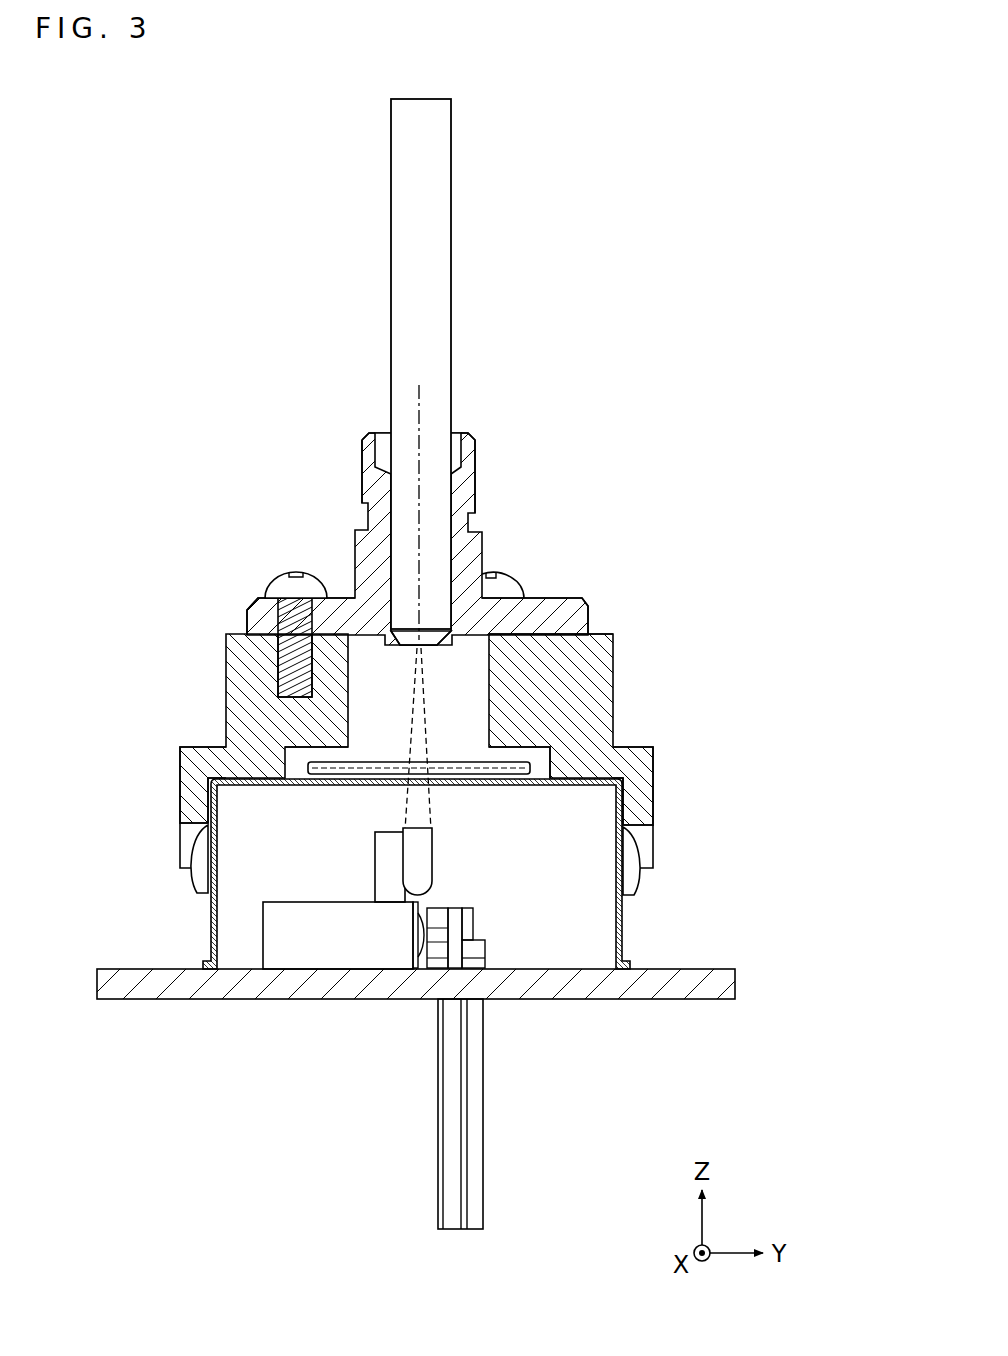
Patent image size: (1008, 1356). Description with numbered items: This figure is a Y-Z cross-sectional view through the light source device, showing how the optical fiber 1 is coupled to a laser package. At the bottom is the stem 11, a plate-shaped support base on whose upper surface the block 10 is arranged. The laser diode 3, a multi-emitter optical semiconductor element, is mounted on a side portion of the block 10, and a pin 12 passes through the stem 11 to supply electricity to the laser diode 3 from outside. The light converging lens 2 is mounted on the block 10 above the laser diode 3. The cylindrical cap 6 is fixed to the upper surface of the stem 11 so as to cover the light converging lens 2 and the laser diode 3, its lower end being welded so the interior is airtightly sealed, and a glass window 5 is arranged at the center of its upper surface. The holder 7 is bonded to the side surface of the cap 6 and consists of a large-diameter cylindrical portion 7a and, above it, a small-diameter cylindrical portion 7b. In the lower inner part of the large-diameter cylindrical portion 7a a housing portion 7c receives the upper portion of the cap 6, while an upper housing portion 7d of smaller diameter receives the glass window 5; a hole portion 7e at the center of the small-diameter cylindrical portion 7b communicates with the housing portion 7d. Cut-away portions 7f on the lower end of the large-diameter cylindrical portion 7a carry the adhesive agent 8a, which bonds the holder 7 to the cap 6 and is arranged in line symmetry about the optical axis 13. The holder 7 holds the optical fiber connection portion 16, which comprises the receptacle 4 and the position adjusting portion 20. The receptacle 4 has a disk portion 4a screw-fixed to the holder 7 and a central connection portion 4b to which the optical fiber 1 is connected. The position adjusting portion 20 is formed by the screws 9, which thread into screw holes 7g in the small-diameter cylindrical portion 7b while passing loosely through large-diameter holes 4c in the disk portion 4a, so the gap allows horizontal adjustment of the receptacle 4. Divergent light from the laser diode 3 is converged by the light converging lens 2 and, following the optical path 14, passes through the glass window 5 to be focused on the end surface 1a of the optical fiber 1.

The optical fiber 1 is at (400, 214).
The end surface 1a is at (428, 628).
The light converging lens 2 is at (422, 862).
The laser diode 3 is at (427, 935).
The receptacle 4 is at (353, 539).
The disk portion 4a is at (557, 598).
The connection portion 4b is at (468, 487).
The large-diameter hole 4c is at (257, 598).
The glass window 5 is at (455, 777).
The cap 6 is at (212, 933).
The holder 7 is at (617, 645).
The large-diameter cylindrical portion 7a is at (188, 780).
The small-diameter cylindrical portion 7b is at (240, 700).
The housing portion 7c is at (625, 780).
The housing portion 7d is at (550, 757).
The hole portion 7e is at (485, 662).
The cut-away portion 7f is at (186, 850).
The screw hole 7g is at (278, 658).
The adhesive agent 8a is at (198, 878).
The screw 9 is at (283, 583).
The block 10 is at (321, 955).
The stem 11 is at (736, 985).
The pin 12 is at (481, 1153).
The optical axis 13 is at (422, 414).
The optical path 14 is at (405, 810).
The optical fiber connection portion 16 is at (280, 514).
The position adjusting portion 20 is at (232, 610).